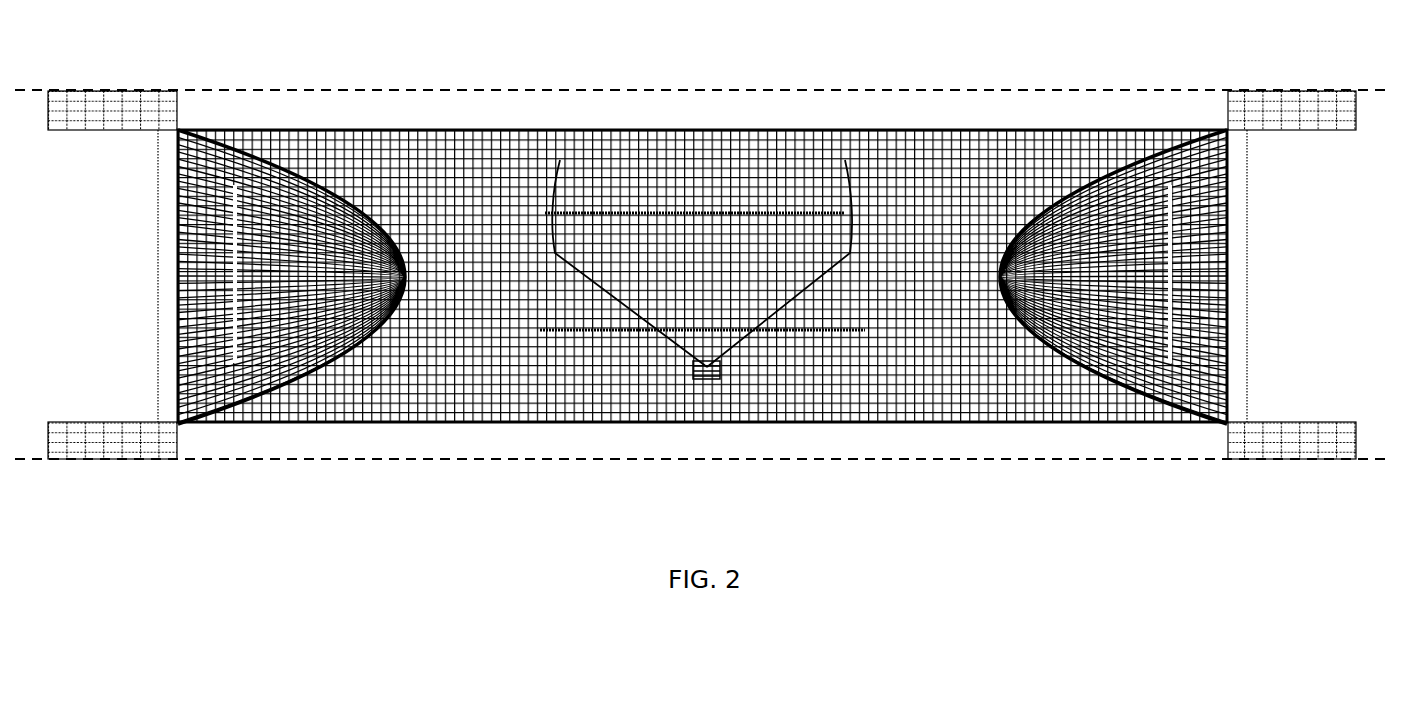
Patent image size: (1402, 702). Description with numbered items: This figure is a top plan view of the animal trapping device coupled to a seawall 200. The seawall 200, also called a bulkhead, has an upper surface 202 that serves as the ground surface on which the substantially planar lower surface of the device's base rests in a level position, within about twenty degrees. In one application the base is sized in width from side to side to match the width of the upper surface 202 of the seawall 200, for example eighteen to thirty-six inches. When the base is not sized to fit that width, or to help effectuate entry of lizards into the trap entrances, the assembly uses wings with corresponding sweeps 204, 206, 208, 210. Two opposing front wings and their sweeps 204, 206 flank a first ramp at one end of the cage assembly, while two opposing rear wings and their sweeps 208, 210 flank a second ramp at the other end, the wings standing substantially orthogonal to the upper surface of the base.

The seawall 200 is at (281, 98).
The upper surface of seawall 202 is at (476, 109).
The sweep 204 is at (115, 98).
The sweep 206 is at (67, 425).
The sweep 208 is at (1237, 98).
The sweep 210 is at (1273, 458).